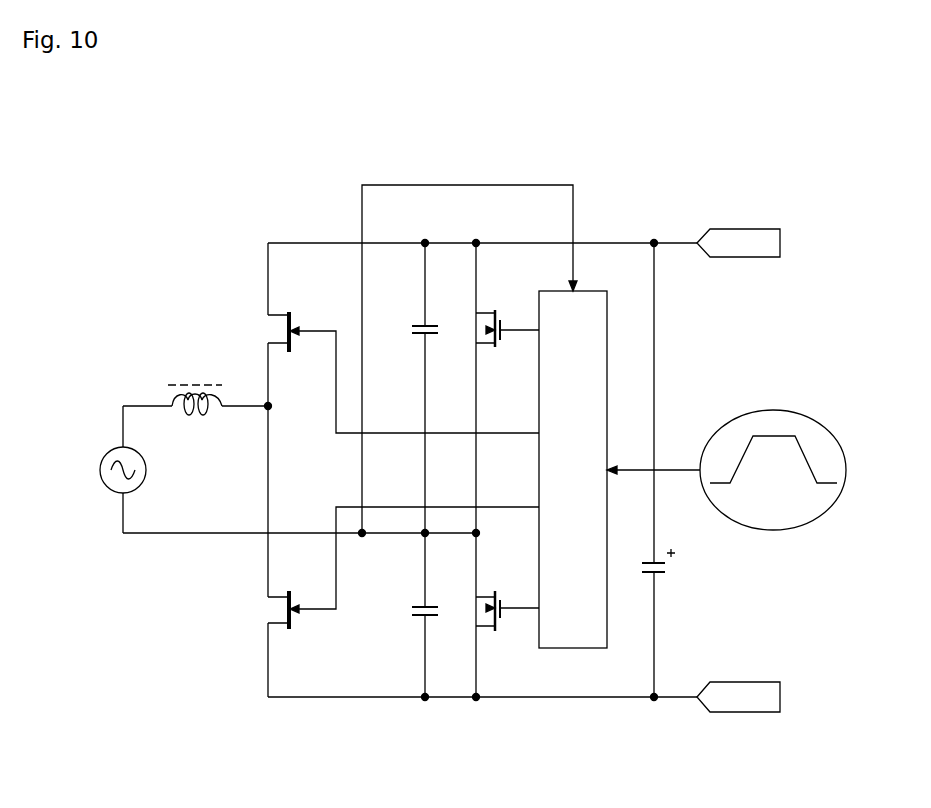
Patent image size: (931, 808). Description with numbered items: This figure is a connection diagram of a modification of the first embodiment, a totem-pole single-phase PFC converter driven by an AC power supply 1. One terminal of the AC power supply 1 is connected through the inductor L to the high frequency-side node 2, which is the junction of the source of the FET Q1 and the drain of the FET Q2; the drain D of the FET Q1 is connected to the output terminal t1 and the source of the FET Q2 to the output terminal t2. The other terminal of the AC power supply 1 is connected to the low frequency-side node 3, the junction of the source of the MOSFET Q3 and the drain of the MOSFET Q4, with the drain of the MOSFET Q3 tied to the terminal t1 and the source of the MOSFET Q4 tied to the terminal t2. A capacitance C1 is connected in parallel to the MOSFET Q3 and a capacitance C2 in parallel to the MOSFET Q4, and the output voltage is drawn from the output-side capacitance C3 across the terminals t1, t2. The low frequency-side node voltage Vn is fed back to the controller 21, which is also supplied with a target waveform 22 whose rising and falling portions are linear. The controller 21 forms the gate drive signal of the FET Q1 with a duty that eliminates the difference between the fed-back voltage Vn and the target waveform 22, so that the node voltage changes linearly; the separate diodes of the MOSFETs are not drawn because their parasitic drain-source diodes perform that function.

The AC power supply 1 is at (108, 455).
The inductor L is at (190, 418).
The high frequency-side node 2 is at (272, 406).
The low frequency-side node voltage Vn is at (362, 540).
The low frequency-side node 3 is at (480, 533).
The FET Q1 is at (292, 314).
The FET Q2 is at (292, 593).
The MOSFET Q3 is at (503, 321).
The MOSFET Q4 is at (503, 601).
The drain D is at (254, 445).
The capacitance C1 is at (418, 332).
The capacitance C2 is at (418, 613).
The capacitance C3 is at (641, 566).
The controller 21 is at (608, 385).
The target waveform 22 is at (772, 410).
The output terminal t1 is at (746, 258).
The output terminal t2 is at (745, 682).